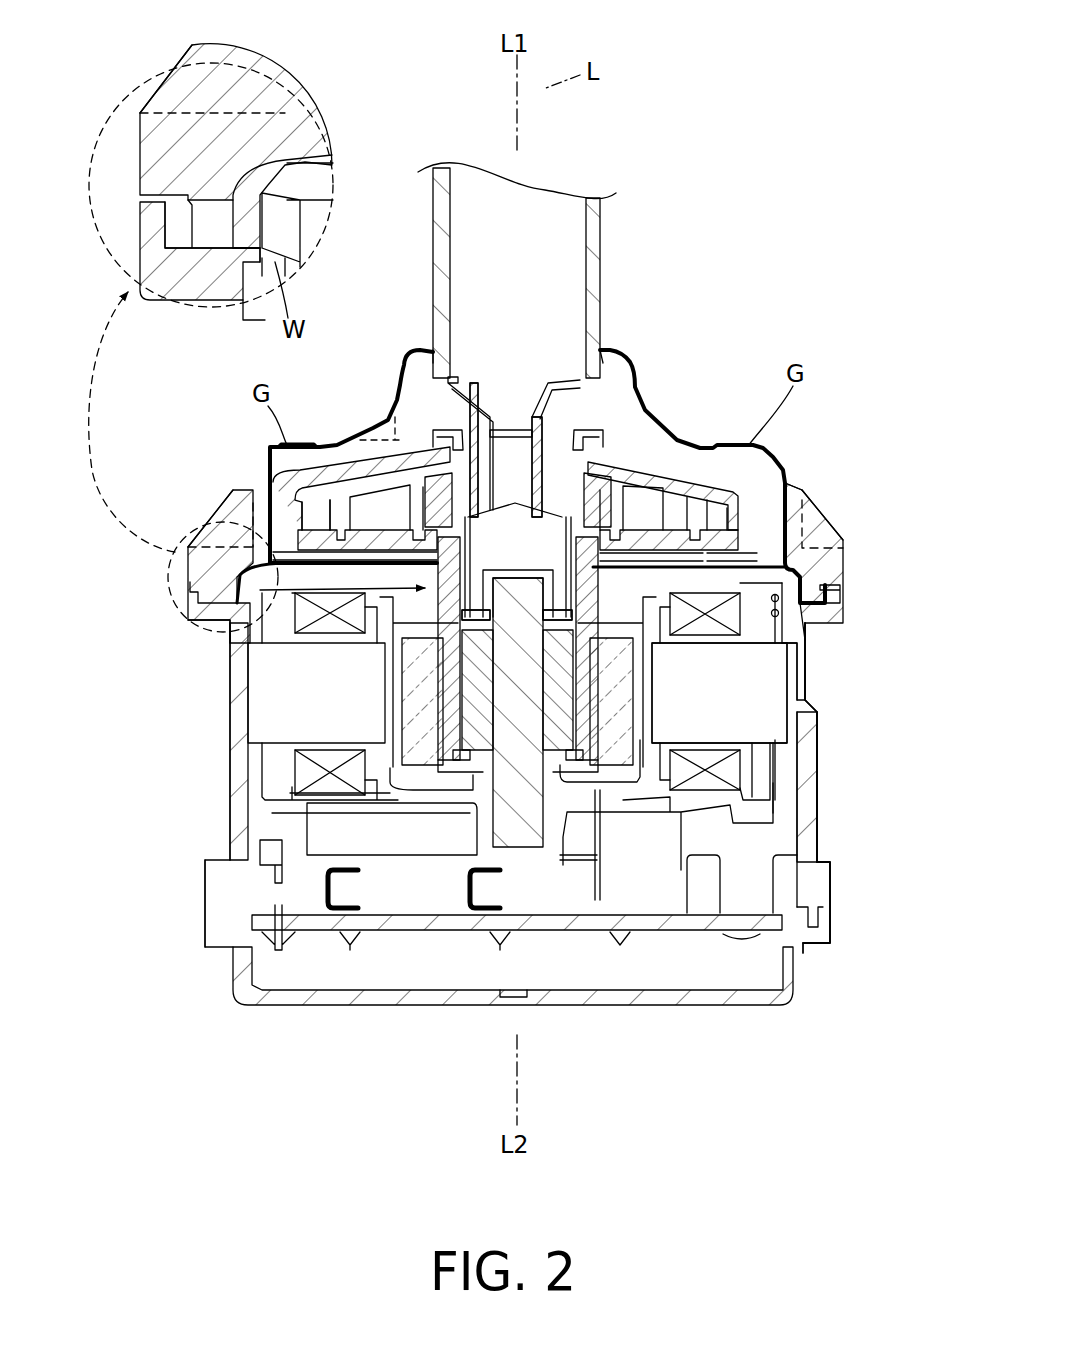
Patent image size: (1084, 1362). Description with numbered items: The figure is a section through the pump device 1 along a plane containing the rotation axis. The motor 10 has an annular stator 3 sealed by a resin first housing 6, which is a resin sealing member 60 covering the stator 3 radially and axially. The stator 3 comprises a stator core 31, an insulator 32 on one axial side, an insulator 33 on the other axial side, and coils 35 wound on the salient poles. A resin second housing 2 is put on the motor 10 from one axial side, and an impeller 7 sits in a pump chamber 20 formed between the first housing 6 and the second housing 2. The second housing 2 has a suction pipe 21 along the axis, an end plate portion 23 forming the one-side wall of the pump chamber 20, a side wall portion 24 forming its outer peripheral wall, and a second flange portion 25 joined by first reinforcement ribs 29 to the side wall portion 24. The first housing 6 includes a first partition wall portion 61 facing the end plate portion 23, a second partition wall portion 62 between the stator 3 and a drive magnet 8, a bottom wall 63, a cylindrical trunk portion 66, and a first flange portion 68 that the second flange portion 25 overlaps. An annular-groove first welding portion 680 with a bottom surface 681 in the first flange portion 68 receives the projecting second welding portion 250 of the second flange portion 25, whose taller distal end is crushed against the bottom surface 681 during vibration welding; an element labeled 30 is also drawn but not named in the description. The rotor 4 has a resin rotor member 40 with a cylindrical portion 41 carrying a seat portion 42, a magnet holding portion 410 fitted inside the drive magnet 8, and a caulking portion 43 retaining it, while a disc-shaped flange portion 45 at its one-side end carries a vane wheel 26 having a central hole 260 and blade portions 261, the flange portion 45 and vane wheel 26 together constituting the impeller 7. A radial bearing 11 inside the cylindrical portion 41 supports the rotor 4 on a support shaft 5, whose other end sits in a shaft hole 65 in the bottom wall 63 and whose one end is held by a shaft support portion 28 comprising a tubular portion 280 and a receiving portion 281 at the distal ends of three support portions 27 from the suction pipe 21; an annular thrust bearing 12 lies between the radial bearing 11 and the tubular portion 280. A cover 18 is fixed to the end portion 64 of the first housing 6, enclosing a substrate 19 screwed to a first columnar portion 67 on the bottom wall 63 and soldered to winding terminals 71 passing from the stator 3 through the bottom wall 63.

The pump device 1 is at (832, 229).
The second housing 2 is at (703, 440).
The stator 3 is at (800, 663).
The rotor 4 is at (350, 582).
The support shaft 5 is at (515, 828).
The first housing 6 is at (822, 825).
The resin sealing member 60 is at (816, 783).
The impeller 7 is at (200, 483).
The drive magnet 8 is at (440, 735).
The motor 10 is at (226, 782).
The radial bearing 11 is at (415, 715).
The thrust bearing 12 is at (735, 477).
The cover 18 is at (647, 1000).
The substrate 19 is at (594, 800).
The pump chamber 20 is at (514, 544).
The suction pipe 21 is at (606, 236).
The end plate portion 23 is at (712, 450).
The side wall portion 24 is at (807, 487).
The second flange portion 25 is at (155, 148).
The vane wheel 26 is at (307, 542).
The support portions 27 is at (553, 397).
The shaft support portion 28 is at (730, 312).
The first reinforcement ribs 29 is at (175, 65).
The gap 30 is at (383, 415).
The stator core 31 is at (757, 698).
The insulator 32 is at (840, 594).
The insulator 33 is at (758, 781).
The coils 35 is at (732, 767).
The rotor member 40 is at (452, 618).
The cylindrical portion 41 is at (517, 615).
The seat portion 42 is at (425, 680).
The caulking portion 43 is at (465, 745).
The flange portion 45 is at (282, 555).
The first partition wall portion 61 is at (793, 553).
The second partition wall portion 62 is at (795, 650).
The bottom wall 63 is at (596, 795).
The end portion 64 is at (823, 895).
The shaft hole 65 is at (577, 922).
The trunk portion 66 is at (815, 712).
The first columnar portion 67 is at (768, 884).
The first flange portion 68 is at (140, 275).
The winding terminals 71 is at (325, 890).
The second welding portion 250 is at (242, 215).
The central hole 260 is at (365, 430).
The blade portions 261 is at (350, 530).
The tubular portion 280 is at (596, 452).
The receiving portion 281 is at (632, 468).
The magnet holding portion 410 is at (305, 815).
The first welding portion 680 is at (178, 228).
The bottom surface 681 is at (226, 262).